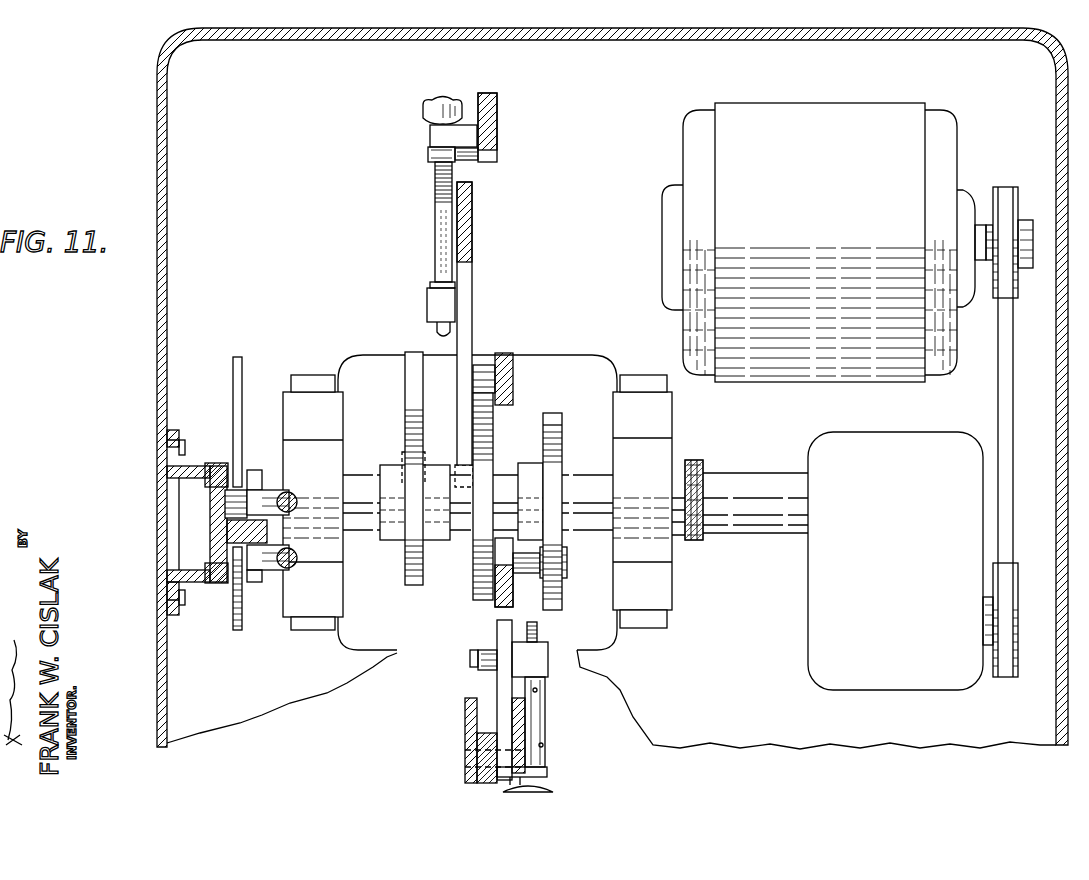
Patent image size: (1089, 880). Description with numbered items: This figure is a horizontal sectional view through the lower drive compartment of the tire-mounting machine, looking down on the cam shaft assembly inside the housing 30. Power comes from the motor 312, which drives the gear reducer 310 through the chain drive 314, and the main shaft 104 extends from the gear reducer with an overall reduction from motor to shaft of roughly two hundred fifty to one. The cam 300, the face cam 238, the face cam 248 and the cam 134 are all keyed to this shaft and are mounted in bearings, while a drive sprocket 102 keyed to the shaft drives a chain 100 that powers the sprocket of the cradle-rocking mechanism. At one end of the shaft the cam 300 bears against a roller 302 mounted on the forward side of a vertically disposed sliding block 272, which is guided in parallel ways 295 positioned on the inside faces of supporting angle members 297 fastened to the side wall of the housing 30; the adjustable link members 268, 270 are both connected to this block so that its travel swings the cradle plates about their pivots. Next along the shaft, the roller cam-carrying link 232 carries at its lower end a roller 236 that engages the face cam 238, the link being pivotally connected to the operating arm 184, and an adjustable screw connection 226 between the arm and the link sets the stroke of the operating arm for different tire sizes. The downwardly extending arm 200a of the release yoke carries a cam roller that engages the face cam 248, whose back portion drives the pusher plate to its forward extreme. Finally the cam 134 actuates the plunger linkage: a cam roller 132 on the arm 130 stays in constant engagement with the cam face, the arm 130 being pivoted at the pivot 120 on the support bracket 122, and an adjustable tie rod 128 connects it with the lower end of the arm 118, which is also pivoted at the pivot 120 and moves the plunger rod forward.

The housing 30 is at (343, 38).
The chain 100 is at (690, 540).
The drive sprocket 102 is at (703, 488).
The main shaft 104 is at (578, 475).
The arm 118 is at (480, 737).
The pivot 120 is at (457, 760).
The support bracket 122 is at (517, 715).
The adjustable tie rod 128 is at (545, 723).
The arm 130 is at (502, 675).
The cam roller 132 is at (565, 566).
The cam 134 is at (563, 596).
The operating arm 184 is at (497, 135).
The arm of yoke 200a is at (508, 392).
The adjustable screw connection 226 is at (440, 212).
The roller cam-carrying link 232 is at (470, 312).
The roller 236 is at (402, 460).
The face cam 238 is at (410, 588).
The face cam 248 is at (478, 545).
The adjustable link member 268 is at (292, 500).
The adjustable link member 270 is at (283, 572).
The sliding block 272 is at (195, 500).
The parallel ways 295 is at (210, 463).
The supporting angle members 297 is at (176, 440).
The cam 300 is at (238, 356).
The roller 302 is at (240, 490).
The gear reducer 310 is at (823, 632).
The motor 312 is at (818, 242).
The chain drive 314 is at (1005, 390).